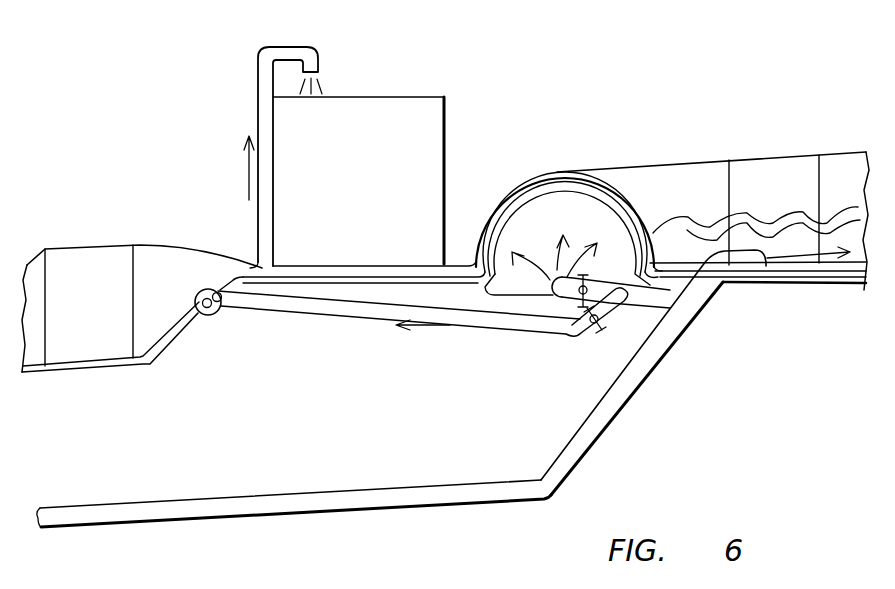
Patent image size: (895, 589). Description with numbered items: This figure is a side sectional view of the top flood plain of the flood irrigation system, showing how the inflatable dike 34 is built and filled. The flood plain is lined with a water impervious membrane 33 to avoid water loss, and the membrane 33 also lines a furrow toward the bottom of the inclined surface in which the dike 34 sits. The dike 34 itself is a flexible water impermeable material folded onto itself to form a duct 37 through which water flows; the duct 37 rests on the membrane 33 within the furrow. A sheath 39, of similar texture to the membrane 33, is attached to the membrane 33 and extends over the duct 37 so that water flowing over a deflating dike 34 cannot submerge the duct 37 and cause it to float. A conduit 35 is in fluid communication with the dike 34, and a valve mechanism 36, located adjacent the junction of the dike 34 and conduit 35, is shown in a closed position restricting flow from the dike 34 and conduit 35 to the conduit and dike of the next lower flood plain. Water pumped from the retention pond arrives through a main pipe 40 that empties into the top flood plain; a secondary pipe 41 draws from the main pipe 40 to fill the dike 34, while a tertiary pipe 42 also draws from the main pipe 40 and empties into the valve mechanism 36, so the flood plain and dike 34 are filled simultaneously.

The water impervious membrane 33 is at (803, 270).
The dike 34 is at (560, 153).
The conduit 35 is at (200, 250).
The valve mechanism 36 is at (382, 83).
The duct 37 is at (561, 198).
The sheath 39 is at (640, 243).
The main pipe 40 is at (207, 503).
The secondary pipe 41 is at (645, 302).
The tertiary pipe 42 is at (267, 50).